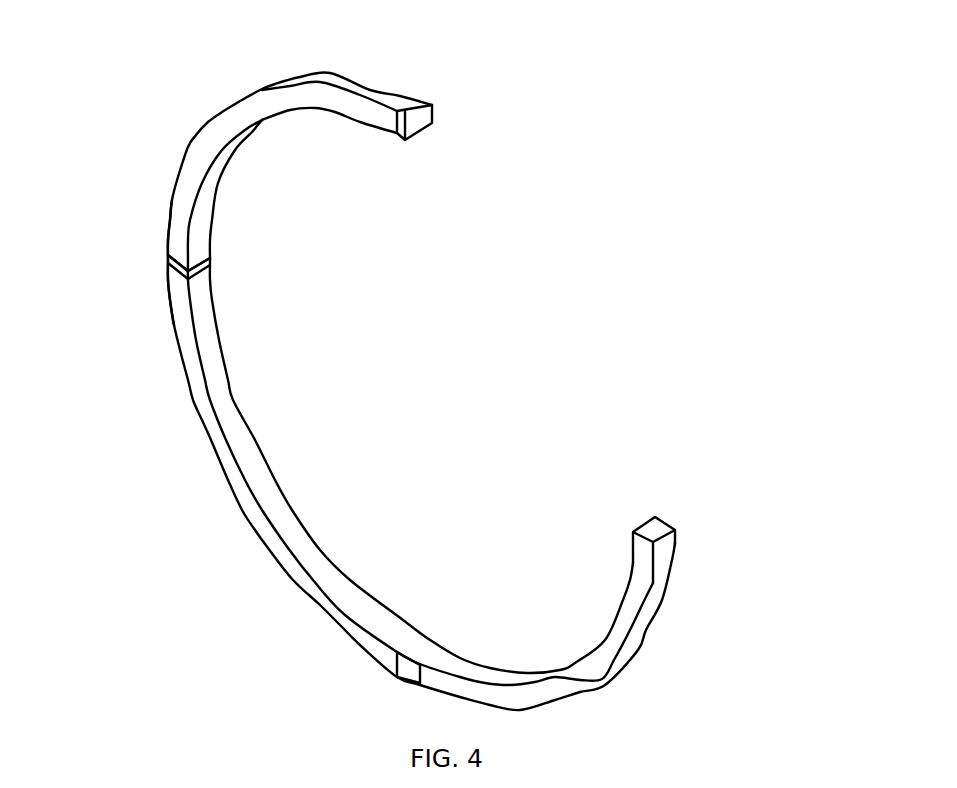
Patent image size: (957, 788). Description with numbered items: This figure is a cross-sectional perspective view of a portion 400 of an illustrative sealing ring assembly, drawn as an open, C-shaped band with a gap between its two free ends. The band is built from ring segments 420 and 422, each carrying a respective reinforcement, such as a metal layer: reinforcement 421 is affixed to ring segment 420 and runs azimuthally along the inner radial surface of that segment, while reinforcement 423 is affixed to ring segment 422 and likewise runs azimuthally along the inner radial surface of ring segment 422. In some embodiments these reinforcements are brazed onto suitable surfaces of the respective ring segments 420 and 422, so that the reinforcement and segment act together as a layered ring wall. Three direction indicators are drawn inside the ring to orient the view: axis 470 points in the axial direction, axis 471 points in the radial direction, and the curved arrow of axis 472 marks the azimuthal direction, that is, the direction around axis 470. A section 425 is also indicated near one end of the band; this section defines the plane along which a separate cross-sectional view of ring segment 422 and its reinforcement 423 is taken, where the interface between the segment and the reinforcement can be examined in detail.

The portion of sealing ring assembly 400 is at (448, 29).
The ring segment 420 is at (677, 550).
The reinforcement 421 is at (223, 408).
The ring segment 422 is at (168, 221).
The reinforcement 423 is at (203, 232).
The section 425 is at (423, 122).
The axis 470 is at (392, 410).
The axis 471 is at (392, 410).
The axis 472 is at (363, 382).